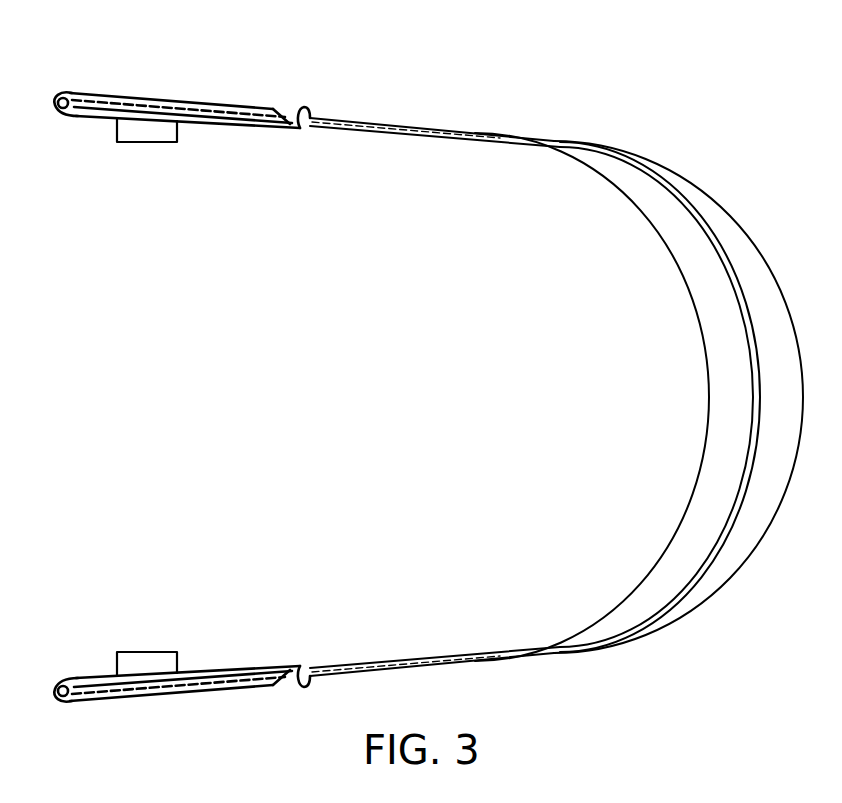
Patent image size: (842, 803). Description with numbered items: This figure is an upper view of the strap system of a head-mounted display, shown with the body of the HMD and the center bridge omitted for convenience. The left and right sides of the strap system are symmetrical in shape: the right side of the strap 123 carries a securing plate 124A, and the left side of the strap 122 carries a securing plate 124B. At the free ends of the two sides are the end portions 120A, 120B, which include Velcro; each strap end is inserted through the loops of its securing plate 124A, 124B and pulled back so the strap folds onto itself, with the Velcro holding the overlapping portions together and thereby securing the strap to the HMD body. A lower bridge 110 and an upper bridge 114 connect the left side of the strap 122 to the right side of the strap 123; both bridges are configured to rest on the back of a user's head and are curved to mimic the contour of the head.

The lower bridge 110 is at (709, 434).
The upper bridge 114 is at (753, 548).
The end portion of the strap 120A is at (150, 143).
The end portion of the strap 120B is at (163, 660).
The left side of the strap 122 is at (347, 667).
The right side of the strap 123 is at (372, 131).
The securing plate 124A is at (254, 129).
The securing plate 124B is at (266, 667).